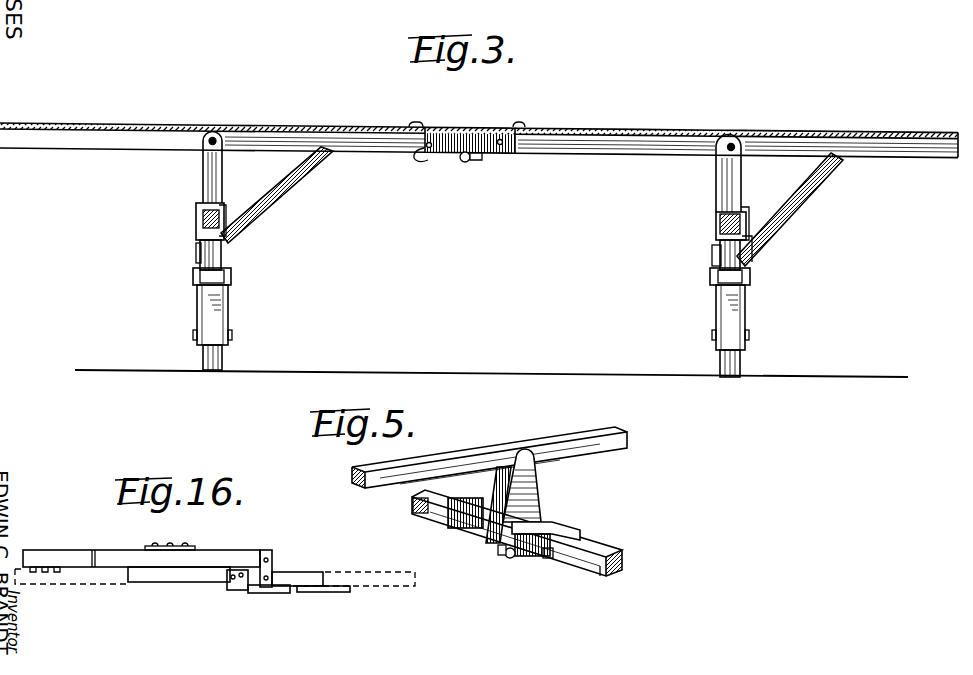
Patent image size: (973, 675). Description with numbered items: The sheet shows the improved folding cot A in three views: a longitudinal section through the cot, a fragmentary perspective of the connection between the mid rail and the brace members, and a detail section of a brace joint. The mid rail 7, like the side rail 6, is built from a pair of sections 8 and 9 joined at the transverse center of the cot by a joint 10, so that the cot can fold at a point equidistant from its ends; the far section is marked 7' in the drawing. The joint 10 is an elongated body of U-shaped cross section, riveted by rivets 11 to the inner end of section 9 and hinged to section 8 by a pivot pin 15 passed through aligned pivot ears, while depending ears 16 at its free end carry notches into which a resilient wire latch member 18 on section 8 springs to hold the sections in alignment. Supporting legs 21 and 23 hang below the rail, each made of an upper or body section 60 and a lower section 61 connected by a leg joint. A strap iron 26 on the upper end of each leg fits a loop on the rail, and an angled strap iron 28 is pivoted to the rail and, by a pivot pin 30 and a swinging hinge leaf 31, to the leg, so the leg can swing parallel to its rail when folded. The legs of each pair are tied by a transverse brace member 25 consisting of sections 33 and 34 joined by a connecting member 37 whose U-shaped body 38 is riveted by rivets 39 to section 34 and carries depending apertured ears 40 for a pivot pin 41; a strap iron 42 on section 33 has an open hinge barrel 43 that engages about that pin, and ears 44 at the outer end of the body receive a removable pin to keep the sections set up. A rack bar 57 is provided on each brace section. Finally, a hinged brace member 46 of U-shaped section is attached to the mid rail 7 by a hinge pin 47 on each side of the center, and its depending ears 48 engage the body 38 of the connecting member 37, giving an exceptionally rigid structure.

In FIG. 3, the mid rail 7 is at (320, 127).
In FIG. 5, the mid rail 7 is at (489, 443).
In FIG. 3, the rail section 7' is at (577, 125).
In FIG. 3, the rail section 8 is at (266, 134).
In FIG. 3, the rail section 9 is at (670, 141).
In FIG. 3, the improved folding cot A is at (753, 129).
In FIG. 3, the hinge pin 47 is at (790, 134).
In FIG. 5, the hinge pin 47 is at (530, 453).
In FIG. 3, the joint 10 is at (461, 163).
In FIG. 3, the rivets 11 is at (521, 154).
In FIG. 3, the pivot pin 15 is at (477, 161).
In FIG. 3, the depending ears 16 is at (430, 162).
In FIG. 3, the resilient latch member 18 is at (420, 158).
In FIG. 5, the hinged brace member 46 is at (538, 490).
In FIG. 5, the brace member 25 is at (601, 568).
In FIG. 16, the strap iron 28 is at (262, 593).
In FIG. 5, the connecting member 37 is at (581, 534).
In FIG. 3, the swinging hinge leaf 31 is at (197, 251).
In FIG. 16, the swinging hinge leaf 31 is at (233, 590).
In FIG. 3, the upper or body section 60 is at (205, 256).
In FIG. 3, the supporting leg 21 is at (227, 265).
In FIG. 16, the supporting leg 21 is at (181, 590).
In FIG. 3, the lower section 61 is at (202, 353).
In FIG. 3, the depending ears 48 is at (751, 219).
In FIG. 5, the depending ears 48 is at (490, 543).
In FIG. 3, the supporting leg 23 is at (742, 262).
In FIG. 5, the body 38 is at (572, 526).
In FIG. 5, the section 33 is at (615, 557).
In FIG. 5, the section 34 is at (420, 509).
In FIG. 5, the rivets 39 is at (470, 523).
In FIG. 5, the depending apertured ears 40 is at (512, 559).
In FIG. 5, the pivot pin 41 is at (503, 556).
In FIG. 5, the ears 44 is at (548, 559).
In FIG. 16, the open hinge barrel 43 is at (38, 566).
In FIG. 16, the rack bar 57 is at (190, 548).
In FIG. 16, the pivot pin 30 is at (272, 552).
In FIG. 16, the strap iron 26 is at (335, 587).
In FIG. 16, the strap iron 42 is at (46, 582).
In FIG. 16, the side rail 6 is at (406, 587).